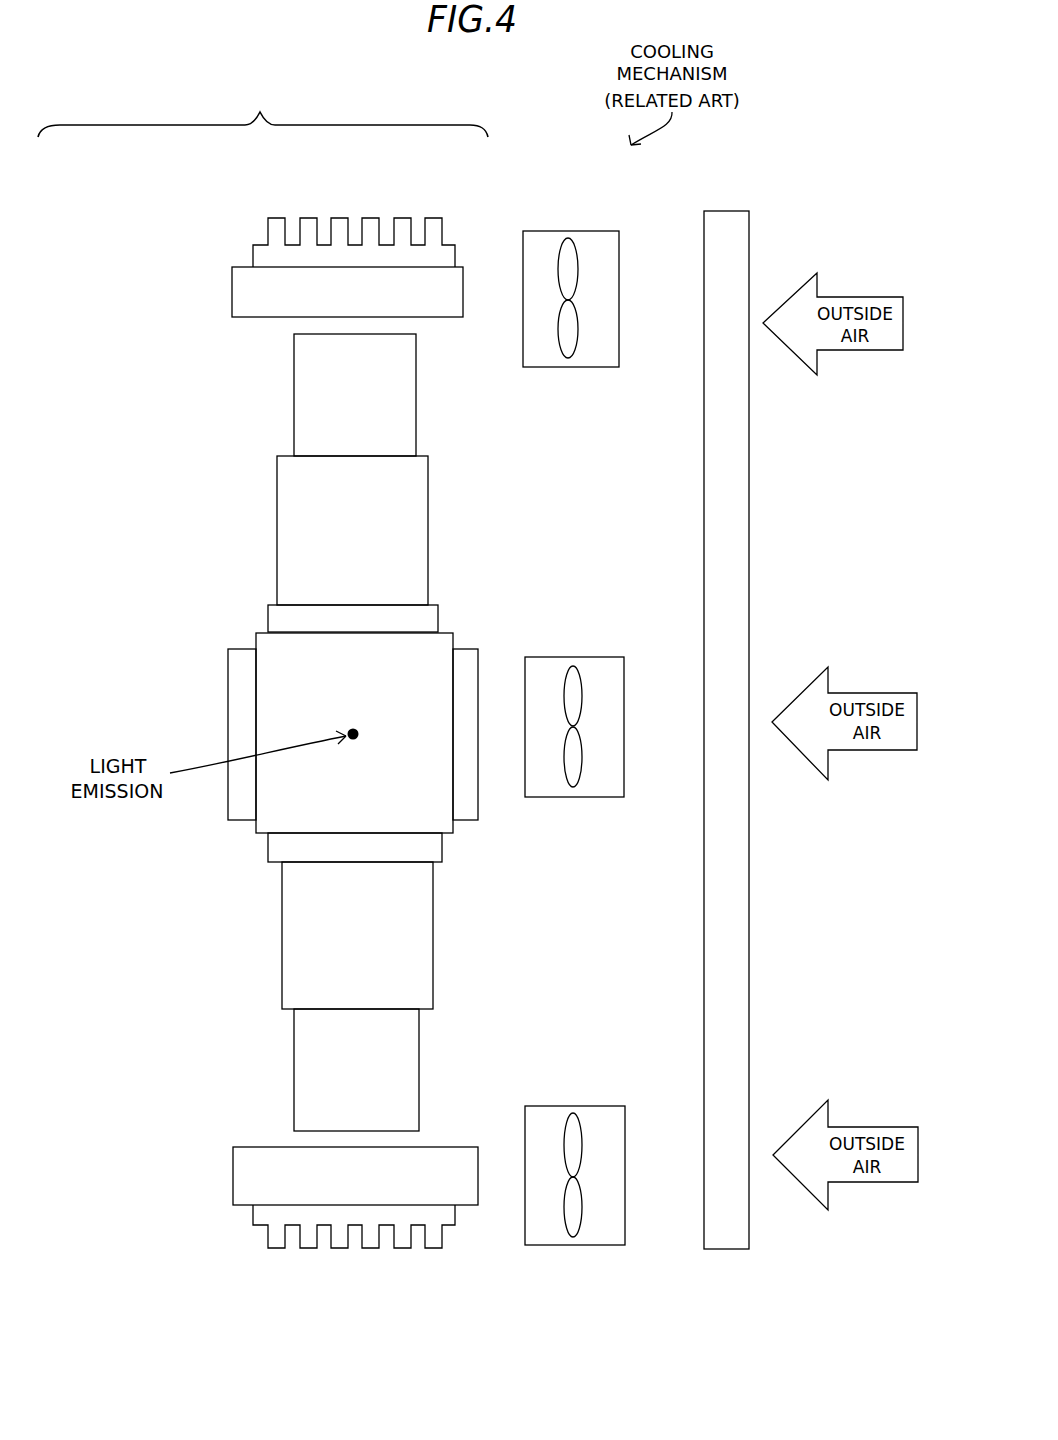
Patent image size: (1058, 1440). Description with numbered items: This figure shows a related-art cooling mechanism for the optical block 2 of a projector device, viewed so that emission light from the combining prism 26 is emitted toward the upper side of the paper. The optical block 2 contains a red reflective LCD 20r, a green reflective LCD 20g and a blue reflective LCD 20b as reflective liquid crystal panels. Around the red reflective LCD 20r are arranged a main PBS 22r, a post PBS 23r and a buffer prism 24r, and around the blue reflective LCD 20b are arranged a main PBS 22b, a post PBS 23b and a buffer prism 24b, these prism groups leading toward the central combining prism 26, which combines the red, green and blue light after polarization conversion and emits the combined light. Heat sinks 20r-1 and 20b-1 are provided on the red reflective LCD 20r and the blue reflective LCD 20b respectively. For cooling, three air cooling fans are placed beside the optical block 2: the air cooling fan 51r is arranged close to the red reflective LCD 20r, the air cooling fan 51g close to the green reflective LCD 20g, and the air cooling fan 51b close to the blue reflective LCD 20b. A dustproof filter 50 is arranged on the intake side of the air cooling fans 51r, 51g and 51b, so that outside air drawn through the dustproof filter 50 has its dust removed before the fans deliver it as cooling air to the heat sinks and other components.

The optical block 2 is at (260, 111).
The red reflective LCD 20r is at (232, 290).
The heat sink 20r-1 is at (283, 216).
The main PBS 22r is at (294, 415).
The post PBS 23r is at (277, 510).
The buffer prism 24r is at (268, 613).
The 4p prism 26 is at (453, 835).
The green reflective LCD 20g is at (228, 690).
The buffer prism 24b is at (268, 848).
The post PBS 23b is at (282, 980).
The main PBS 22b is at (294, 1082).
The blue reflective LCD 20b is at (233, 1178).
The heat sink 20b-1 is at (272, 1249).
The air cooling fan 51r is at (537, 367).
The air cooling fan 51g is at (540, 797).
The air cooling fan 51b is at (545, 1245).
The dustproof filter 50 is at (727, 1250).